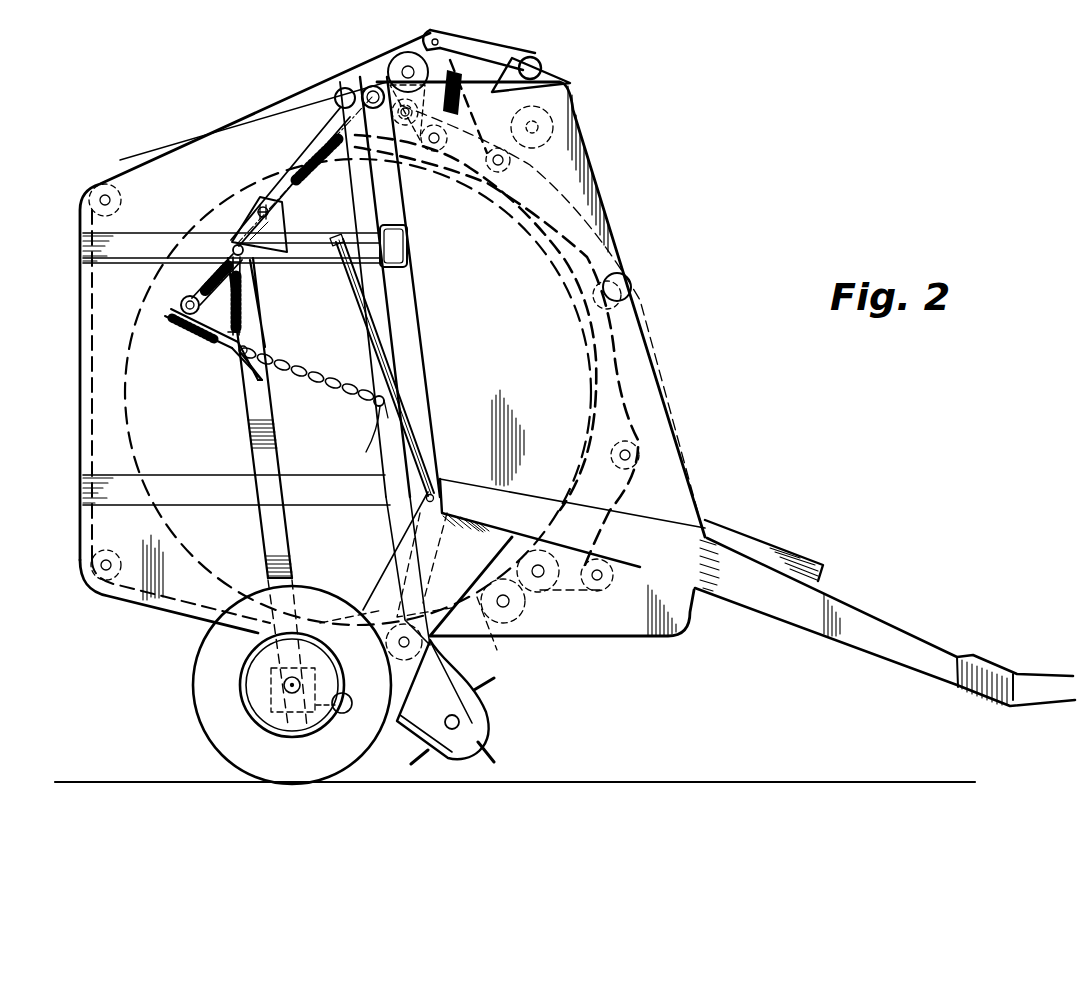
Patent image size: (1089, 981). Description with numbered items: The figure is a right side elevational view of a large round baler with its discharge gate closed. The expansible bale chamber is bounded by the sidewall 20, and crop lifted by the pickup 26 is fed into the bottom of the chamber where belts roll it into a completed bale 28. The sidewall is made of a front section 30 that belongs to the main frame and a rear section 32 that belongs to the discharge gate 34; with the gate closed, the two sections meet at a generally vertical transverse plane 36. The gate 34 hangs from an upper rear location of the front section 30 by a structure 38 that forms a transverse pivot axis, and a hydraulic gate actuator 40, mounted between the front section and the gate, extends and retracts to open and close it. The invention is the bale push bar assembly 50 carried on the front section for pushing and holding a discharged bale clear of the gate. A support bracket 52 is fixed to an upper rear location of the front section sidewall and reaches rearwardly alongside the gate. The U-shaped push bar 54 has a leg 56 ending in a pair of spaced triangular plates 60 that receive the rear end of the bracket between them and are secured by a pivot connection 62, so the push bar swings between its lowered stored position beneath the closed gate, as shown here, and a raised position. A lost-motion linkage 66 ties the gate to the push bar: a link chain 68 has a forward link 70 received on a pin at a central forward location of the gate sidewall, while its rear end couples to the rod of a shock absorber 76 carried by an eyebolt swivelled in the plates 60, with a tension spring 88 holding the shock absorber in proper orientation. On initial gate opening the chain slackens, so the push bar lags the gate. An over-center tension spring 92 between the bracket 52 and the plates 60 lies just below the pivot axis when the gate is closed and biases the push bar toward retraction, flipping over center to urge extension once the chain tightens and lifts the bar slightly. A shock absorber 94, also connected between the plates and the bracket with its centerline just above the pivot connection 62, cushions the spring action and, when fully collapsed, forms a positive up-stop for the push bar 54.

The sidewall 20 is at (502, 368).
The pickup 26 is at (484, 716).
The completed bale 28 is at (497, 627).
The front section 30 is at (616, 210).
The rear section 32 is at (176, 140).
The discharge gate 34 is at (116, 610).
The generally vertical transverse plane 36 is at (384, 296).
The structure forming transverse pivot axis 38 is at (376, 82).
The hydraulic gate actuator 40 is at (382, 370).
The bale push bar assembly 50 is at (236, 372).
The support bracket 52 is at (318, 268).
The U-shaped push bar 54 is at (258, 545).
The leg 56 is at (294, 548).
The triangular plate 60 is at (232, 362).
The pivot connection 62 is at (232, 250).
The linkage 66 is at (310, 392).
The link chain 68 is at (287, 362).
The link 70 is at (368, 448).
The shock absorber 76 is at (178, 342).
The tension spring 88 is at (248, 294).
The tension spring 92 is at (322, 162).
The shock absorber 94 is at (190, 296).